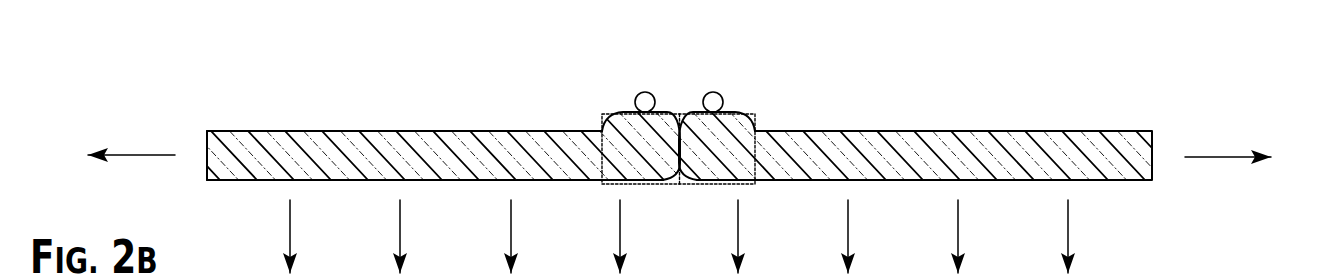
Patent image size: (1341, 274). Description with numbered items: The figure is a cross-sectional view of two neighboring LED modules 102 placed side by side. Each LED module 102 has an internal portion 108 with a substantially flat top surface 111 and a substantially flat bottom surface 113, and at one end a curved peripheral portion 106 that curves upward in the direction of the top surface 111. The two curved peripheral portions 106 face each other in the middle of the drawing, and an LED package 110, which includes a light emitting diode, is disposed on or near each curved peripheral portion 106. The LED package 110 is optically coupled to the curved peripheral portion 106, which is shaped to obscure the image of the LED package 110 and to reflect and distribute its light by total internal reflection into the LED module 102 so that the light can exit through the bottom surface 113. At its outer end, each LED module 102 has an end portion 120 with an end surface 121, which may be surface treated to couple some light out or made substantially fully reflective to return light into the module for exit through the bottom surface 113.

The LED module 102 is at (290, 108).
The curved peripheral portion 106 is at (604, 125).
The internal portion 108 is at (350, 131).
The LED package 110 is at (711, 92).
The top surface 111 is at (463, 131).
The bottom surface 113 is at (457, 180).
The end portion 120 is at (160, 138).
The end surface 121 is at (207, 146).